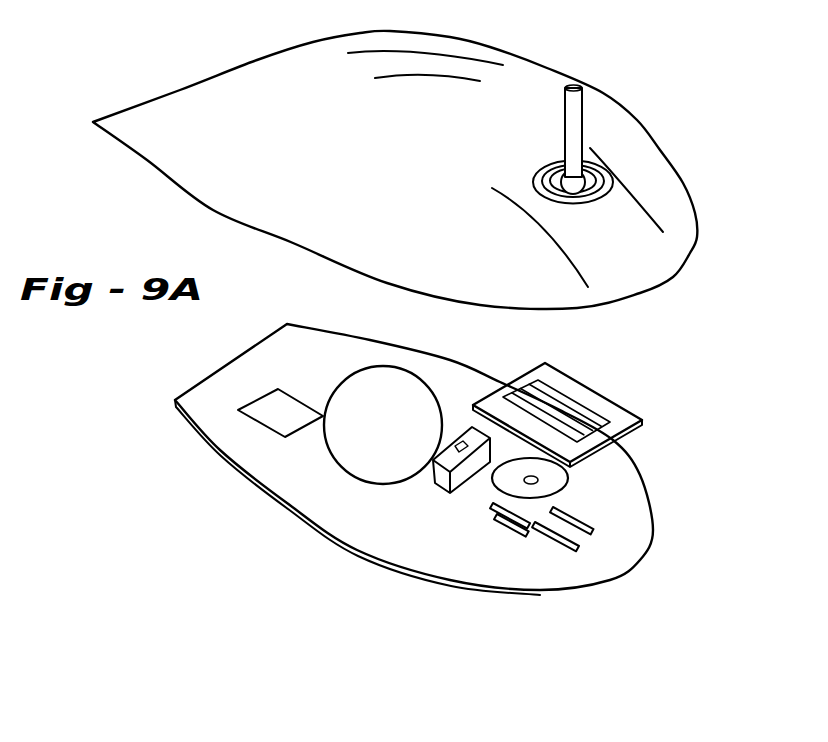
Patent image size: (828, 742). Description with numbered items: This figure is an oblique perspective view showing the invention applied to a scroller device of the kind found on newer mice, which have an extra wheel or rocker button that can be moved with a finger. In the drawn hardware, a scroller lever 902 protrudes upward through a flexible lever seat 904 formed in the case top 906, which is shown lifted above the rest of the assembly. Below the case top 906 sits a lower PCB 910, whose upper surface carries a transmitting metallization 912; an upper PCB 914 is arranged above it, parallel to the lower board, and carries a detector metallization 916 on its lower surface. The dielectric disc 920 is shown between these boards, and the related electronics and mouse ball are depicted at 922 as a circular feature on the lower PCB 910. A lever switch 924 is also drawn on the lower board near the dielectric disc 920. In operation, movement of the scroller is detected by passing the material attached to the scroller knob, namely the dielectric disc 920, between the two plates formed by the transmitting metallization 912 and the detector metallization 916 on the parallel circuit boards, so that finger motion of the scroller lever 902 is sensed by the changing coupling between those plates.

The scroller lever 902 is at (575, 112).
The flexible lever seat 904 is at (607, 215).
The case top 906 is at (270, 77).
The lower PCB 910 is at (345, 515).
The transmitting metallization 912 is at (557, 550).
The upper PCB 914 is at (587, 386).
The detector metallization 916 is at (582, 397).
The dielectric disc 920 is at (550, 473).
The related electronics and mouse ball 922 is at (348, 453).
The lever switch 924 is at (451, 492).